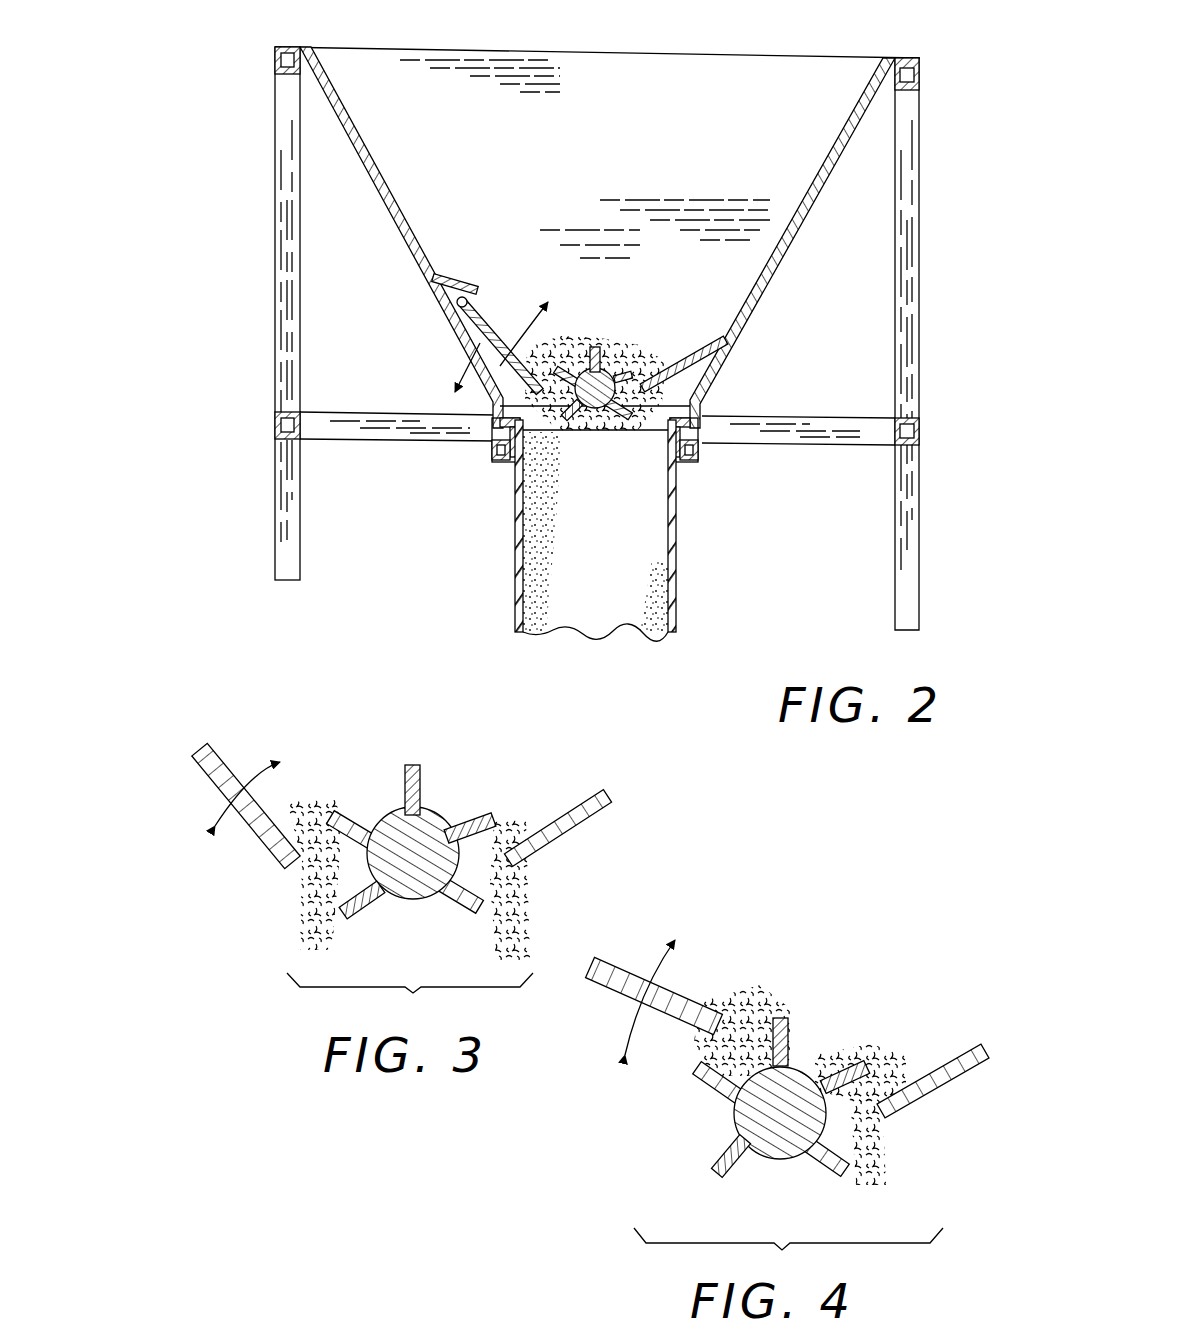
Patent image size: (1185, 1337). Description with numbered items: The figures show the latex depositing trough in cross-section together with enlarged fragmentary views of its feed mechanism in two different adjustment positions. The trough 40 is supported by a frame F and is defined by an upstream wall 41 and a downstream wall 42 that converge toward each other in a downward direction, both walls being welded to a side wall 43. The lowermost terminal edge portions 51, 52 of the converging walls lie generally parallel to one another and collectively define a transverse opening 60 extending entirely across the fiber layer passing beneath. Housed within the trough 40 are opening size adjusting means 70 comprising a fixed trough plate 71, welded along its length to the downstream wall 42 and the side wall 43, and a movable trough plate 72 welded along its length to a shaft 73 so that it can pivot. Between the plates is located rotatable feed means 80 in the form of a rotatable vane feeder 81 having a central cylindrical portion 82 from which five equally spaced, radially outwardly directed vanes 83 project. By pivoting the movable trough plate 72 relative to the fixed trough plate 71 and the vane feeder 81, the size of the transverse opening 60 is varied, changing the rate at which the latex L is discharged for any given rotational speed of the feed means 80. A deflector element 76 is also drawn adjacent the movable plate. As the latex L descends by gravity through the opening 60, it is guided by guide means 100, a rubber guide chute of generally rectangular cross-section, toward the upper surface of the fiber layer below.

In FIG. 2, the trough 40 is at (712, 86).
In FIG. 2, the upstream wall 41 is at (383, 180).
In FIG. 2, the downstream wall 42 is at (792, 238).
In FIG. 2, the side wall 43 is at (620, 155).
In FIG. 2, the lowermost terminal edge portion 51 is at (492, 424).
In FIG. 2, the lowermost terminal edge portion 52 is at (703, 423).
In FIG. 2, the transverse opening 60 is at (633, 450).
In FIG. 2, the opening size adjusting means 70 is at (690, 308).
In FIG. 3, the opening size adjusting means 70 is at (528, 790).
In FIG. 4, the opening size adjusting means 70 is at (935, 1056).
In FIG. 2, the fixed trough plate 71 is at (656, 372).
In FIG. 3, the fixed trough plate 71 is at (606, 808).
In FIG. 4, the fixed trough plate 71 is at (965, 1070).
In FIG. 2, the movable trough plate 72 is at (543, 324).
In FIG. 3, the movable trough plate 72 is at (229, 768).
In FIG. 4, the movable trough plate 72 is at (608, 976).
In FIG. 2, the shaft 73 is at (478, 304).
In FIG. 2, the deflector bar 76 is at (455, 277).
In FIG. 2, the rotatable feed means 80 is at (620, 376).
In FIG. 3, the rotatable feed means 80 is at (455, 826).
In FIG. 4, the rotatable feed means 80 is at (792, 1059).
In FIG. 2, the rotatable vane feeder 81 is at (598, 348).
In FIG. 3, the rotatable vane feeder 81 is at (441, 816).
In FIG. 4, the rotatable vane feeder 81 is at (795, 1062).
In FIG. 2, the central cylindrical portion 82 is at (612, 372).
In FIG. 3, the central cylindrical portion 82 is at (416, 889).
In FIG. 4, the central cylindrical portion 82 is at (781, 1128).
In FIG. 2, the vanes 83 is at (589, 418).
In FIG. 3, the vanes 83 is at (346, 818).
In FIG. 4, the vanes 83 is at (774, 1036).
In FIG. 2, the guide means 100 is at (680, 571).
In FIG. 2, the frame F is at (908, 378).
In FIG. 2, the latex L is at (535, 372).
In FIG. 3, the latex L is at (322, 803).
In FIG. 4, the latex L is at (725, 992).